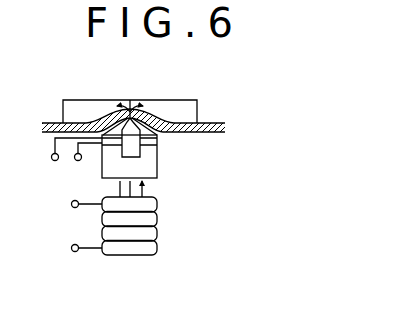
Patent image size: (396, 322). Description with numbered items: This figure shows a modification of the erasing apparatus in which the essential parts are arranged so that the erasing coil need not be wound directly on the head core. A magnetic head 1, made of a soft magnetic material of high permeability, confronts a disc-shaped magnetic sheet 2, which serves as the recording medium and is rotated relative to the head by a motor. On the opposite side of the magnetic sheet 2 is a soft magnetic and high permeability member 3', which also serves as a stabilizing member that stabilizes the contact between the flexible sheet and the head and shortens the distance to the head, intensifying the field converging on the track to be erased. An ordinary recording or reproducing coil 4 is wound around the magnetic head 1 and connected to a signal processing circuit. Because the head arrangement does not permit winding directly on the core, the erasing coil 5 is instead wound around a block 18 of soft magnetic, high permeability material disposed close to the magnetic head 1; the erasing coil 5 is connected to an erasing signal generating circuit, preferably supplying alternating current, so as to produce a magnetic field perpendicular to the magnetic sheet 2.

The magnetic head 1 is at (150, 162).
The magnetic sheet 2 is at (210, 122).
The soft magnetic and high permeability member 3' is at (130, 86).
The recording or reproducing coil 4 is at (112, 151).
The erasing coil 5 is at (158, 222).
The block 18 is at (132, 251).